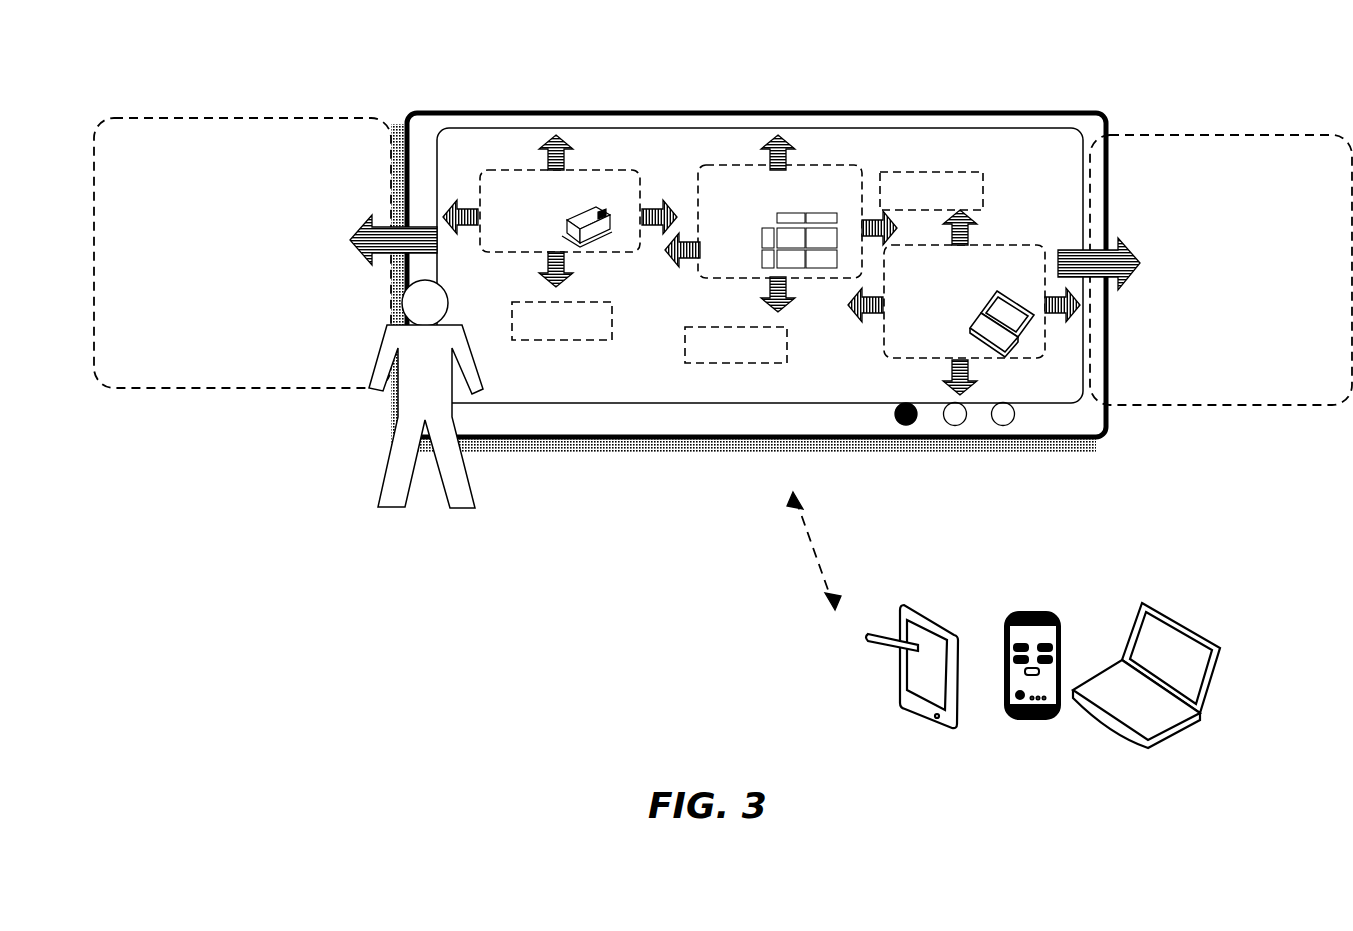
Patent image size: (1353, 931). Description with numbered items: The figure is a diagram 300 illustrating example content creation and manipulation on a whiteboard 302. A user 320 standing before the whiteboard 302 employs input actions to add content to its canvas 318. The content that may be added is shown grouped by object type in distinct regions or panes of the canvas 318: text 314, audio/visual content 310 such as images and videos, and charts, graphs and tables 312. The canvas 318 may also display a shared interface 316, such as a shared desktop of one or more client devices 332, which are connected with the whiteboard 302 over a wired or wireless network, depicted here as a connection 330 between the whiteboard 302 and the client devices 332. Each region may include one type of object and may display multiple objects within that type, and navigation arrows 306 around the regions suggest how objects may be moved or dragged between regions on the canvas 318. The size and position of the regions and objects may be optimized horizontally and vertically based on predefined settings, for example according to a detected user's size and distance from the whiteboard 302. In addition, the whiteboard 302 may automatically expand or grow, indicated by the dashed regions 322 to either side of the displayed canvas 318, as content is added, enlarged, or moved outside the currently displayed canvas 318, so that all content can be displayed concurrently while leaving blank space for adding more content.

The diagram 300 is at (1247, 70).
The whiteboard 302 is at (1004, 85).
The navigation arrow 306 is at (783, 132).
The audio/visual content 310 is at (538, 158).
The charts, graphs and tables 312 is at (752, 158).
The text 314 is at (723, 327).
The shared interface 316 is at (987, 232).
The canvas 318 is at (888, 158).
The user 320 is at (480, 484).
The expansion of the whiteboard 322 is at (220, 108).
The wireless connection 330 is at (827, 553).
The client devices 332 is at (1019, 784).